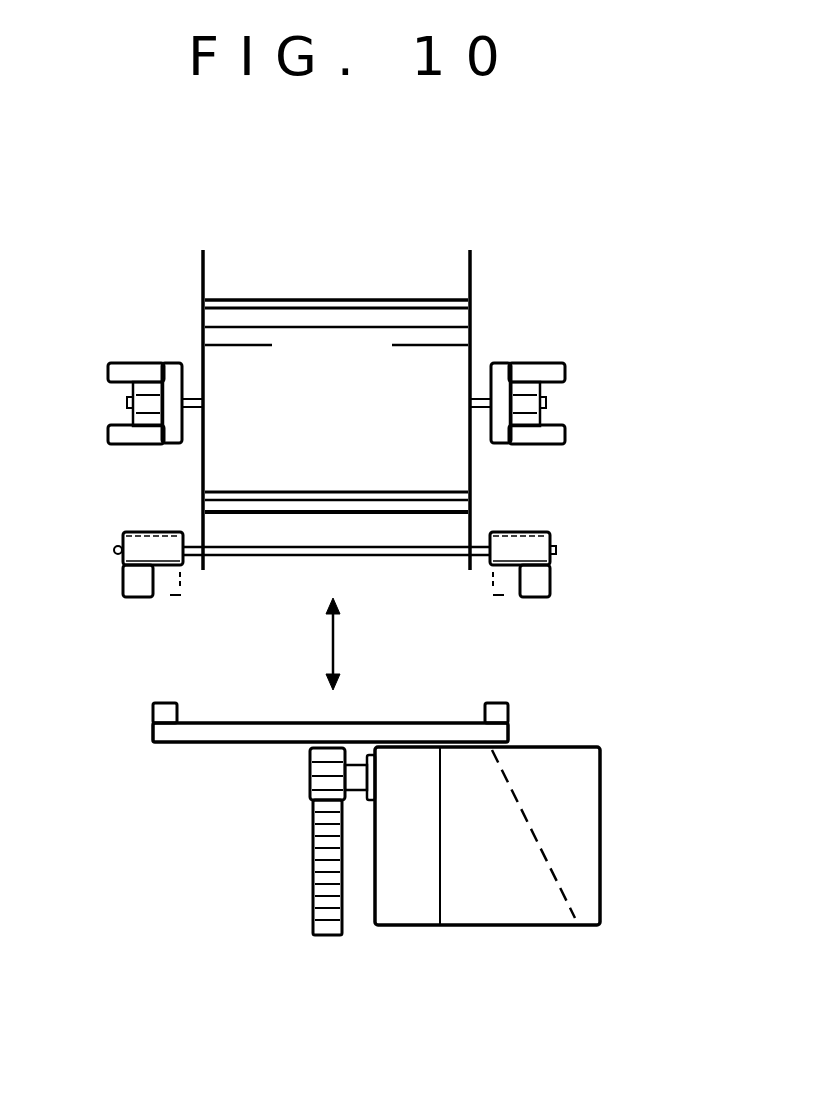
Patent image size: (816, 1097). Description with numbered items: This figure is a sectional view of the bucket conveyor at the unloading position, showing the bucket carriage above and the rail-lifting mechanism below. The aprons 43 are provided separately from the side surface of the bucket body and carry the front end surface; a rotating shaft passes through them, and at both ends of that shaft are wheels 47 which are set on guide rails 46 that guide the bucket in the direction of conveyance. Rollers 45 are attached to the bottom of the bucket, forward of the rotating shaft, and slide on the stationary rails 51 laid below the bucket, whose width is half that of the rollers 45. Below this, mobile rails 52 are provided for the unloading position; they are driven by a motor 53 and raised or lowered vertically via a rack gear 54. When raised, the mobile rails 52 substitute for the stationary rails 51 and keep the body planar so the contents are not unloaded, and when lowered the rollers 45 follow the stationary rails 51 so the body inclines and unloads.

The apron 43 is at (200, 270).
The roller 45 is at (125, 535).
The guide rail 46 is at (562, 368).
The wheel 47 is at (543, 403).
The stationary rail 51 is at (553, 585).
The mobile rail 52 is at (508, 705).
The motor 53 is at (525, 903).
The rack gear 54 is at (313, 880).